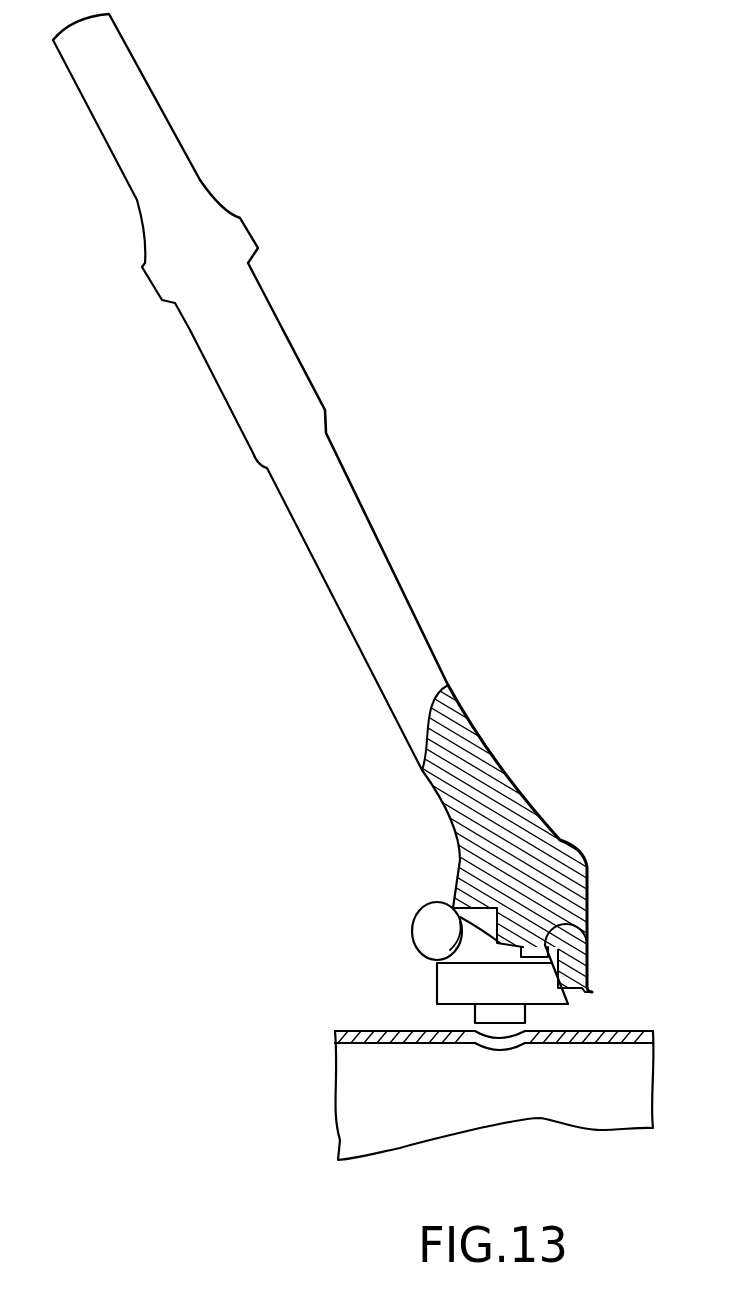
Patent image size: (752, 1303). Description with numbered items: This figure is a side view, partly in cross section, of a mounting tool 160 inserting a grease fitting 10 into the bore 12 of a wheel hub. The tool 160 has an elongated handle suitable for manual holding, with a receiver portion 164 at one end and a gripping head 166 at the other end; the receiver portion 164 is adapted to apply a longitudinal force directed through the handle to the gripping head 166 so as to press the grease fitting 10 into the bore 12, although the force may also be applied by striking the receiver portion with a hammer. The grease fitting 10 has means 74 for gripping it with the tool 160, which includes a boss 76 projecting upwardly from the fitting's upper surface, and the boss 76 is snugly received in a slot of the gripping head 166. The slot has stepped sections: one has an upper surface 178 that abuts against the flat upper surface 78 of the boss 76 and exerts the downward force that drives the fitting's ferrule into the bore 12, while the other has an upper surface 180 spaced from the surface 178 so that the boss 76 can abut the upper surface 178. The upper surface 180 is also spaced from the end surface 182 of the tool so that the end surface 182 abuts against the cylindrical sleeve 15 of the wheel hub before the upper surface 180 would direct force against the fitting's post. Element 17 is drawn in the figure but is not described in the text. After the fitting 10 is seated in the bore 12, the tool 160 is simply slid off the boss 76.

The mounting tool 160 is at (358, 514).
The receiver portion 164 is at (138, 70).
The gripping head 166 is at (533, 840).
The upper surface of section 176 180 is at (470, 875).
The upper surface of section 174 178 is at (580, 921).
The flat upper surface of boss 78 is at (523, 947).
The end surface of tool 182 is at (582, 992).
The grease fitting 10 is at (471, 968).
The boss 76 is at (436, 961).
The means for gripping the grease fitting 74 is at (424, 989).
The stem 17 is at (525, 1013).
The cylindrical sleeve 15 is at (450, 1095).
The bore 12 is at (478, 1054).